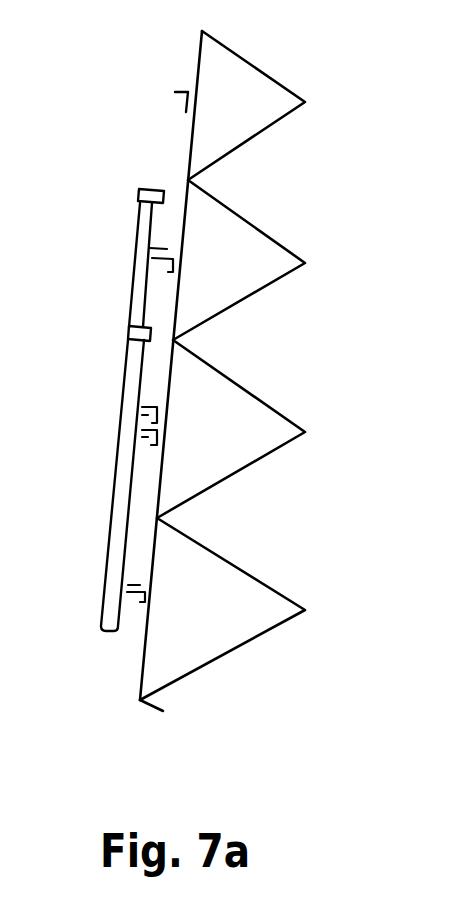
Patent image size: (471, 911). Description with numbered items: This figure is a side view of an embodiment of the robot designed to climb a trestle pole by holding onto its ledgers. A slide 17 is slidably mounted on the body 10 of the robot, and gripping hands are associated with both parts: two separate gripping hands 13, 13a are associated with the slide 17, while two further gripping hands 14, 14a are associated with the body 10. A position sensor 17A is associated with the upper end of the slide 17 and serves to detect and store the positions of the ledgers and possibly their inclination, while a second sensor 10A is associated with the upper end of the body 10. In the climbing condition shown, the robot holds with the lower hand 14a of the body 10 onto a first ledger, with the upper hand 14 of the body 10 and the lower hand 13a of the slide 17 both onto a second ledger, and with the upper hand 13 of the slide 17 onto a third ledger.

The body 10 is at (116, 535).
The second sensor 10A is at (147, 327).
The upper gripping hand of the slide 13 is at (160, 262).
The lower gripping hand of the slide 13a is at (143, 440).
The upper gripping hand of the body 14 is at (155, 404).
The lower gripping hand of the body 14a is at (137, 602).
The slide 17 is at (137, 283).
The position sensor 17A is at (149, 190).